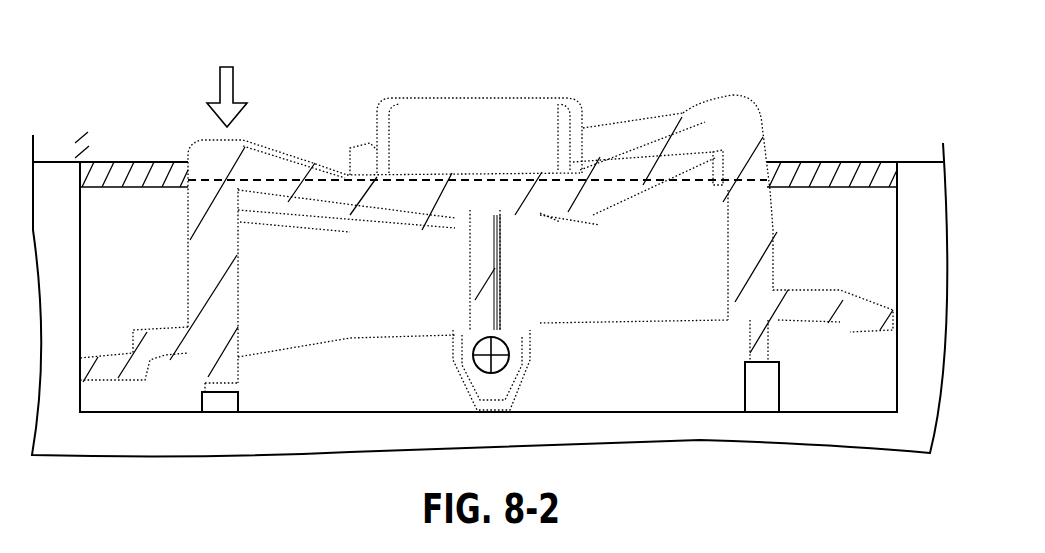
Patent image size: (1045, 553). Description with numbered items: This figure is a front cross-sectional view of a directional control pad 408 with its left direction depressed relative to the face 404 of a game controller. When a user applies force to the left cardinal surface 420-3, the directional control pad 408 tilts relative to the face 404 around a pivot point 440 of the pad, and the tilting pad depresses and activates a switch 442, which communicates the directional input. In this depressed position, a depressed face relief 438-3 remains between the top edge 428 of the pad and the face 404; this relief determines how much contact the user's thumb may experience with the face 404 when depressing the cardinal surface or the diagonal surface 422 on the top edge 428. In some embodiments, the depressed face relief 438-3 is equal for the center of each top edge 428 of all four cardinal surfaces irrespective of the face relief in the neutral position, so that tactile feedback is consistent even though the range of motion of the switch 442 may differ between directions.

The face 404 is at (920, 162).
The directional control pad 408 is at (486, 232).
The left cardinal surface 420-3 is at (295, 157).
The diagonal surface 422 is at (352, 143).
The top edge 428 is at (200, 143).
The depressed face relief 438-3 is at (81, 163).
The pivot point 440 is at (508, 361).
The switch 442 is at (220, 398).